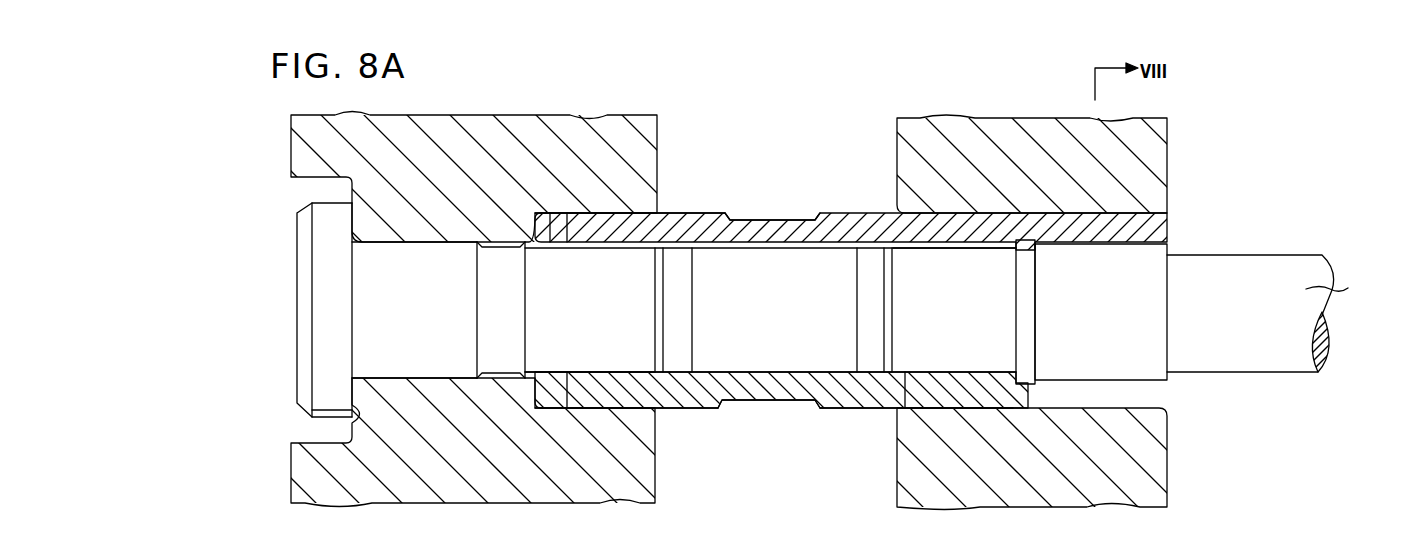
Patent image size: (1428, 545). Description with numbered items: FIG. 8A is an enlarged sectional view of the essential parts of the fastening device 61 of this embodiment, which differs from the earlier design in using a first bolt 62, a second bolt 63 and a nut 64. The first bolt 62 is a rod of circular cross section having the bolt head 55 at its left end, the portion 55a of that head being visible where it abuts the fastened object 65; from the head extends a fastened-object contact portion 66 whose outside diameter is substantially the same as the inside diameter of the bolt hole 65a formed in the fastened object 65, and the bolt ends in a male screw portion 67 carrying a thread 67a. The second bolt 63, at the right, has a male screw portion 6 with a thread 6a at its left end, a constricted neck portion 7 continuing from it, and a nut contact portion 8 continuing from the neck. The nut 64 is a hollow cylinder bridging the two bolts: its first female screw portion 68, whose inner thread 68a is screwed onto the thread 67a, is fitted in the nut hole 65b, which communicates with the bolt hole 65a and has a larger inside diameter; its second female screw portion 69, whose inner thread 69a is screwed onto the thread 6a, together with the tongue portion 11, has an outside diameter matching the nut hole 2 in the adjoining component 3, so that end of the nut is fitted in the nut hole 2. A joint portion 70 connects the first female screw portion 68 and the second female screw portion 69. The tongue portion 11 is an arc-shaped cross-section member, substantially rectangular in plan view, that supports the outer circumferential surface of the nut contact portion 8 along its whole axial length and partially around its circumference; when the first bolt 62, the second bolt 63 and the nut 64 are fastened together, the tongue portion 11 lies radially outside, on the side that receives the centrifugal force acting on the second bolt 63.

The nut hole 2 is at (1130, 410).
The upper housing 3 is at (1155, 160).
The male screw portion 6 is at (905, 290).
The thread 6a is at (950, 246).
The constricted neck portion 7 is at (1030, 313).
The nut contact portion 8 is at (1150, 308).
The tongue portion 11 is at (1140, 232).
The bolt head 55 is at (320, 348).
The plug flange 55a is at (355, 414).
The fastening device 61 is at (773, 162).
The first bolt 62 is at (297, 292).
The second bolt 63 is at (1310, 290).
The nut 64 is at (690, 214).
The fastened object 65 is at (305, 150).
The bolt hole 65a is at (418, 243).
The nut hole 65b is at (343, 213).
The fastened-object contact portion 66 is at (420, 355).
The male screw portion 67 is at (585, 357).
The thread 67a is at (608, 245).
The first female screw portion 68 is at (633, 395).
The thread 68a is at (627, 375).
The second female screw portion 69 is at (930, 402).
The thread 69a is at (922, 375).
The joint portion 70 is at (770, 400).